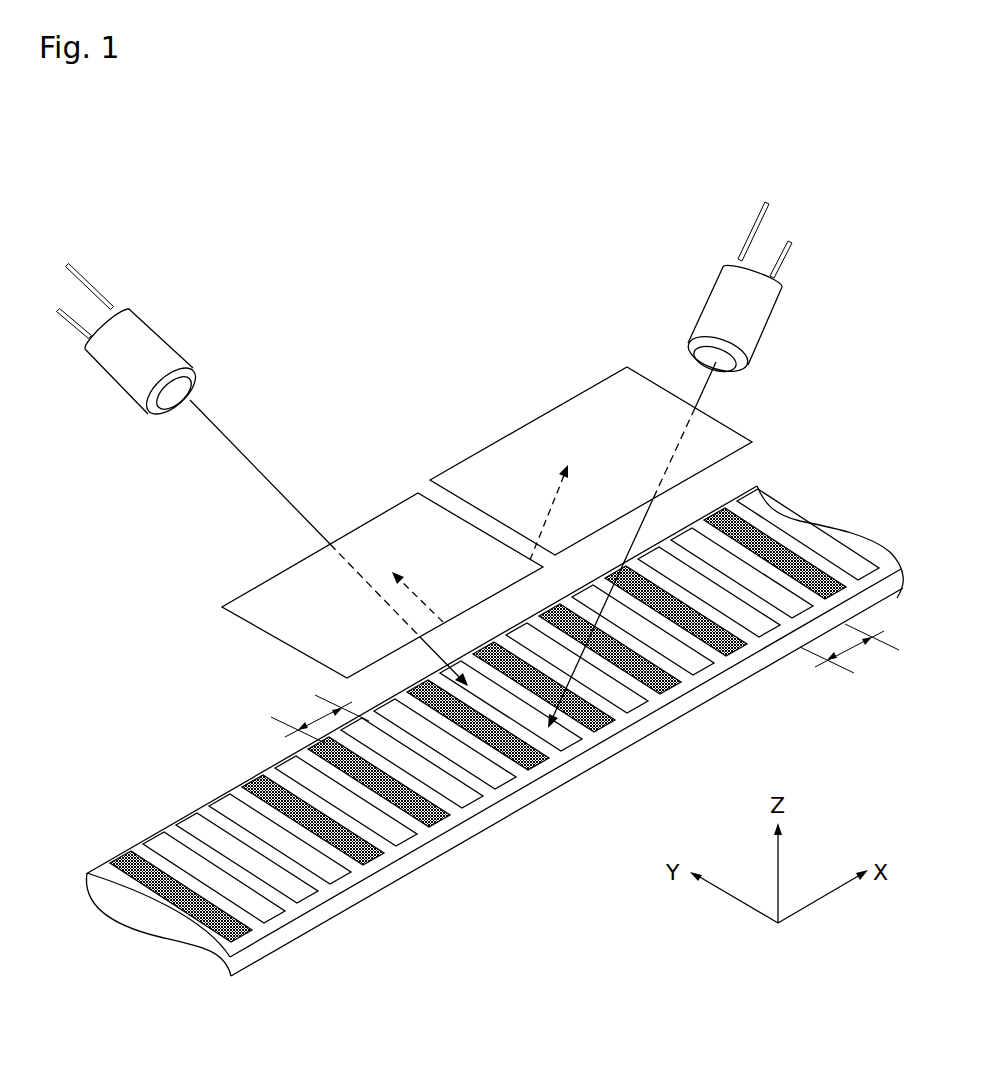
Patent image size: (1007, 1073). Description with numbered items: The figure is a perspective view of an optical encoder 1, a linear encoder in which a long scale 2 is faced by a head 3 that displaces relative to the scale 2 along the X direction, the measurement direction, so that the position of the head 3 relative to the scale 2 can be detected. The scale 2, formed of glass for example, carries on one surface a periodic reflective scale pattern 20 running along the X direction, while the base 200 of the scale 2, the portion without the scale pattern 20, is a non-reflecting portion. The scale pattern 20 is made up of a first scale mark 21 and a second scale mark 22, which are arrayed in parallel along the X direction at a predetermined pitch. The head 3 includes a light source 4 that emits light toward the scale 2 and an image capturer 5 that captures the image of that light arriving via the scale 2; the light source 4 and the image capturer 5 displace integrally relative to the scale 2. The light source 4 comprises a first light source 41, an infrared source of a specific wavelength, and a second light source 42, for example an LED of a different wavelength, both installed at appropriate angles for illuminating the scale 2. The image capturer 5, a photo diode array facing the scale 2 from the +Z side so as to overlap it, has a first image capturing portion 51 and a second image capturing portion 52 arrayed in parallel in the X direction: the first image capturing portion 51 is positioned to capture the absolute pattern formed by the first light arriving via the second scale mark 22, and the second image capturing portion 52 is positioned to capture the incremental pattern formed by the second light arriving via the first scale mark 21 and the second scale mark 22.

The optical encoder 1 is at (803, 388).
The scale 2 is at (358, 929).
The head 3 is at (463, 429).
The light source 4 is at (150, 293).
The first light source 41 is at (708, 298).
The second light source 42 is at (158, 332).
The image capturer 5 is at (376, 505).
The first image capturing portion 51 is at (283, 568).
The second image capturing portion 52 is at (517, 432).
The scale pattern 20 is at (250, 775).
The first scale mark 21 is at (680, 690).
The second scale mark 22 is at (172, 823).
The base 200 is at (453, 807).